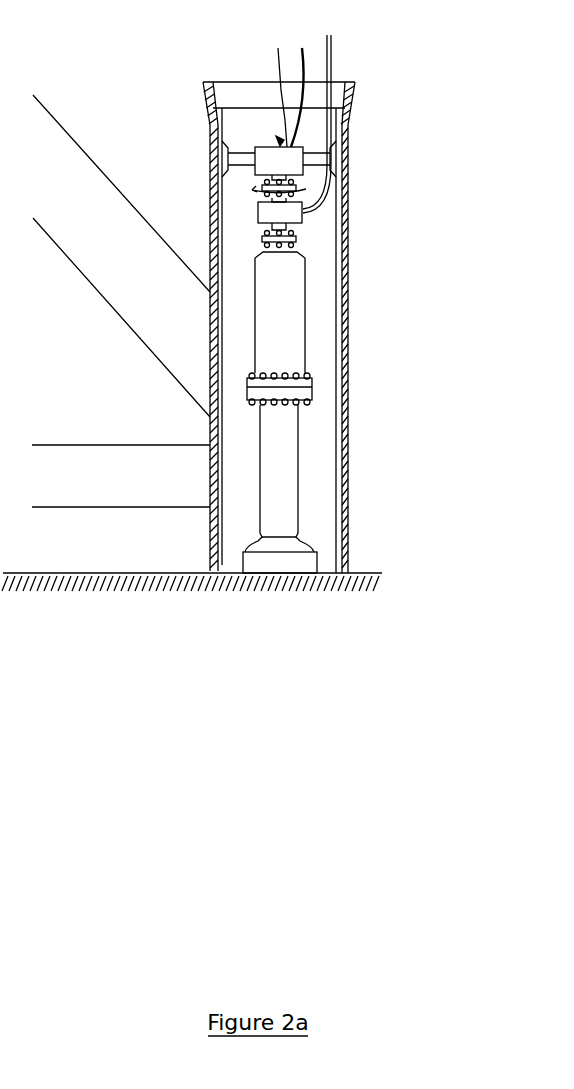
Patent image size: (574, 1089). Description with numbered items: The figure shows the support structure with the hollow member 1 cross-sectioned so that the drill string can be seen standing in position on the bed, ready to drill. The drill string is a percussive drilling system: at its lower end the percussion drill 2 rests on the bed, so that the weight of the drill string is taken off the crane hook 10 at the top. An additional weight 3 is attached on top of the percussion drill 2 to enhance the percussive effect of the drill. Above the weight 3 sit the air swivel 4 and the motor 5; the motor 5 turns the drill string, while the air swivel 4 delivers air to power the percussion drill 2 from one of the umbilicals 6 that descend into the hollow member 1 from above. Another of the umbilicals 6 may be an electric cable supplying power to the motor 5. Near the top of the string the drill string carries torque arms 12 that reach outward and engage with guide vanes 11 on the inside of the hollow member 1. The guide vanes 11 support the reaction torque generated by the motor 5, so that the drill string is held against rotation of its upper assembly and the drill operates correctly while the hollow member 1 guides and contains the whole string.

The hollow member 1 is at (350, 138).
The percussion drill 2 is at (292, 508).
The weight 3 is at (293, 352).
The air swivel 4 is at (300, 218).
The motor 5 is at (253, 150).
The umbilicals 6 is at (328, 92).
The crane hook 10 is at (279, 138).
The guide vanes 11 is at (337, 278).
The torque arms 12 is at (332, 162).